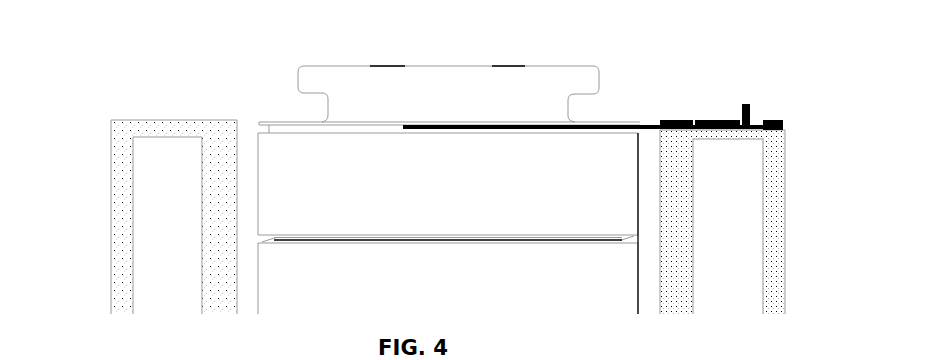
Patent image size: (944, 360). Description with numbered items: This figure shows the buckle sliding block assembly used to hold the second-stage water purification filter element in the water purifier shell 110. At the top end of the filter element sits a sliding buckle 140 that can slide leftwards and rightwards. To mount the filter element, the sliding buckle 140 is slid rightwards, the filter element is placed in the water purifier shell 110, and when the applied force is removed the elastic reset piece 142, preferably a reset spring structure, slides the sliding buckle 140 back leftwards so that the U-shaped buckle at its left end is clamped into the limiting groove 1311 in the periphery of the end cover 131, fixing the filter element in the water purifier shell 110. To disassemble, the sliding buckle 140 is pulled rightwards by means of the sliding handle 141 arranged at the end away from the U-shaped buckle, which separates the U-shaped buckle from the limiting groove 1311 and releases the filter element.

The water purifier shell 110 is at (120, 223).
The end cover 131 is at (281, 149).
The limiting groove 1311 is at (295, 129).
The sliding buckle 140 is at (645, 125).
The sliding handle 141 is at (749, 105).
The elastic reset piece 142 is at (780, 121).